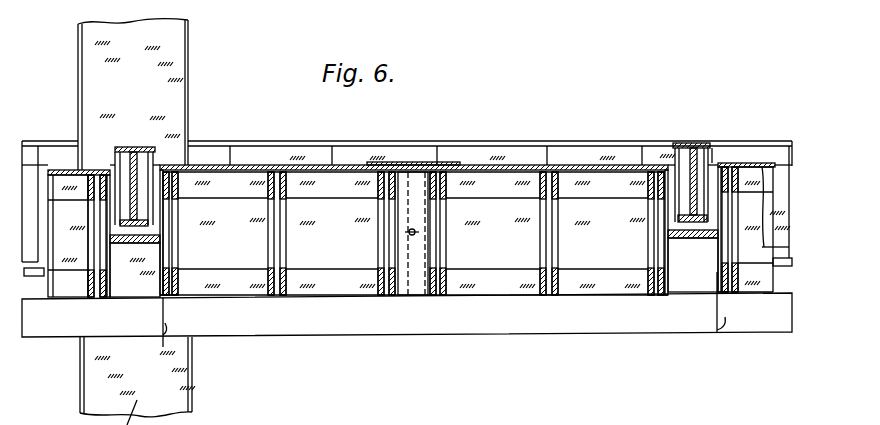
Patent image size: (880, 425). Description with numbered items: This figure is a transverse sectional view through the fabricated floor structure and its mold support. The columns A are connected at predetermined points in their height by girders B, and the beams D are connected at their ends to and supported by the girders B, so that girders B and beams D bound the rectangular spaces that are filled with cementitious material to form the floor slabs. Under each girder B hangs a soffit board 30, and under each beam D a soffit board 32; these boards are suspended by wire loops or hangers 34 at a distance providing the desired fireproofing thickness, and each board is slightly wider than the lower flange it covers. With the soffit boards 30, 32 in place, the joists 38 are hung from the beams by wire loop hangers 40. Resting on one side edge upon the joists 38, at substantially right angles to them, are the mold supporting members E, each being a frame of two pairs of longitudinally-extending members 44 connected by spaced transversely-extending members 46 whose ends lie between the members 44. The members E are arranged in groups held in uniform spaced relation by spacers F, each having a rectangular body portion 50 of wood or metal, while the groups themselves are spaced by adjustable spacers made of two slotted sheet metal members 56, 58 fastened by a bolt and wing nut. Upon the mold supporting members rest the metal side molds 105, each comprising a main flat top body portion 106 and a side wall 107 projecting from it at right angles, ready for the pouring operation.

The column A is at (176, 53).
The girder B is at (50, 146).
The beam D is at (122, 146).
The mold supporting member E is at (372, 228).
The spacer F is at (750, 172).
The soffit board 30 is at (782, 266).
The soffit board 32 is at (132, 244).
The wire loop hanger 34 is at (713, 152).
The joist 38 is at (295, 328).
The wire loop hanger 40 is at (163, 340).
The longitudinally-extending member 44 is at (177, 289).
The transversely-extending member 46 is at (98, 240).
The rectangular body portion 50 is at (475, 230).
The sheet metal member 56 is at (413, 287).
The sheet metal member 58 is at (423, 287).
The side mold 105 is at (312, 162).
The main flat top body portion 106 is at (70, 170).
The side wall 107 is at (168, 212).